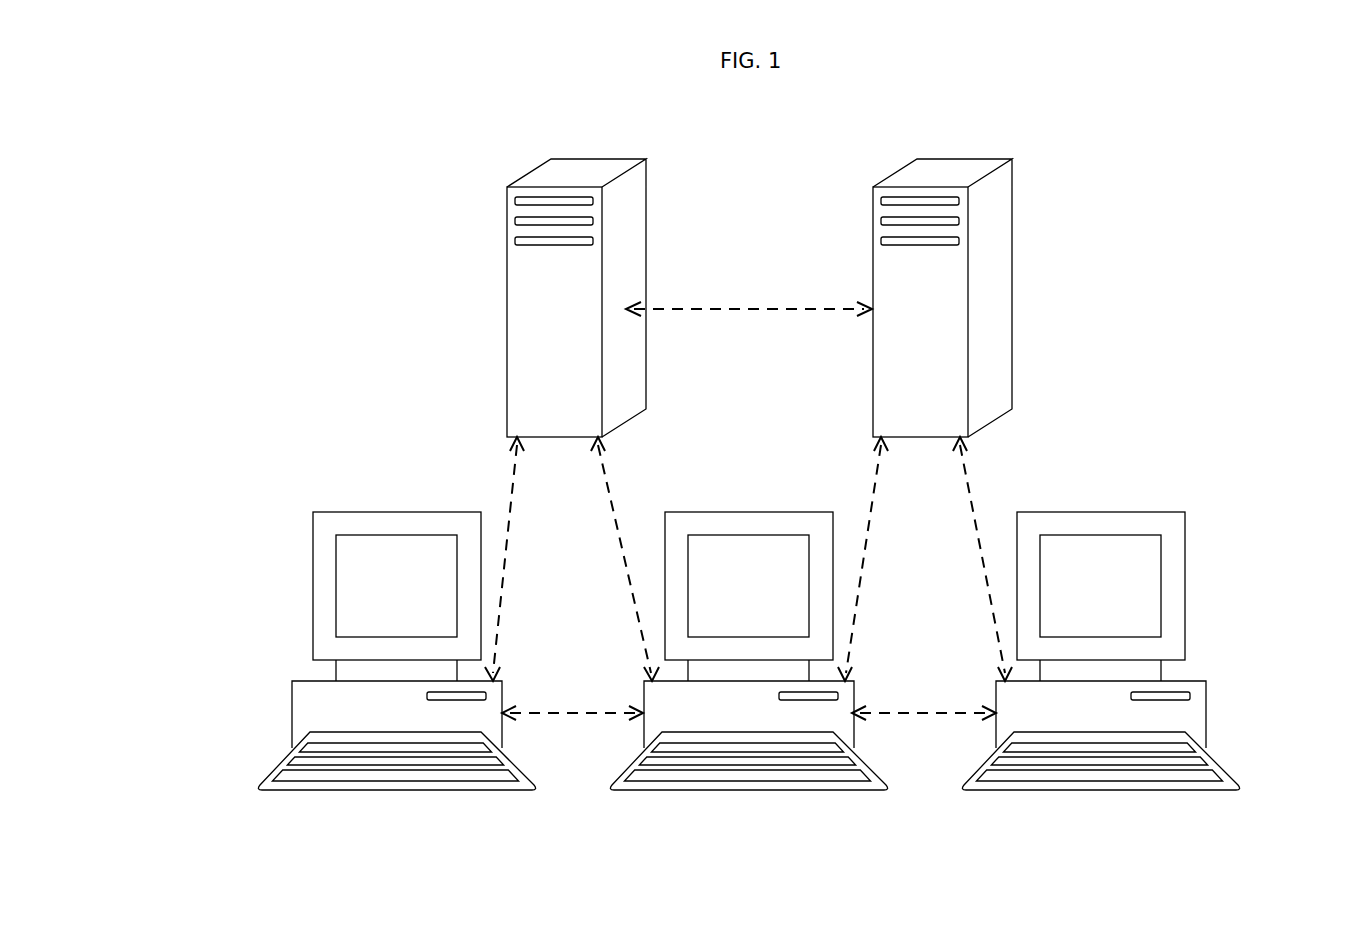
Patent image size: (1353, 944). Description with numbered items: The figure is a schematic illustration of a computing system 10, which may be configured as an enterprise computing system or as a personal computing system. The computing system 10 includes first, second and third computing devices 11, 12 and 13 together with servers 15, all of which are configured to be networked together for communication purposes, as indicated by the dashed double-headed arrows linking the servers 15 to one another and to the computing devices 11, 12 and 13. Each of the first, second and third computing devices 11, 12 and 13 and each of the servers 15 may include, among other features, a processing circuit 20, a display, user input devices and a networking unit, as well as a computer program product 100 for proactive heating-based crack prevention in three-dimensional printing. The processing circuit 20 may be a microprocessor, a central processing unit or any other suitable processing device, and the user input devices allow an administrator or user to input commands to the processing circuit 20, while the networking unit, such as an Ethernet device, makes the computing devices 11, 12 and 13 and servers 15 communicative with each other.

The computing system 10 is at (401, 333).
The first computing device 11 is at (290, 788).
The second computing device 12 is at (699, 788).
The third computing device 13 is at (1062, 788).
The servers 15 is at (546, 180).
The processing circuit 20 is at (531, 297).
The computer program product 100 is at (420, 693).